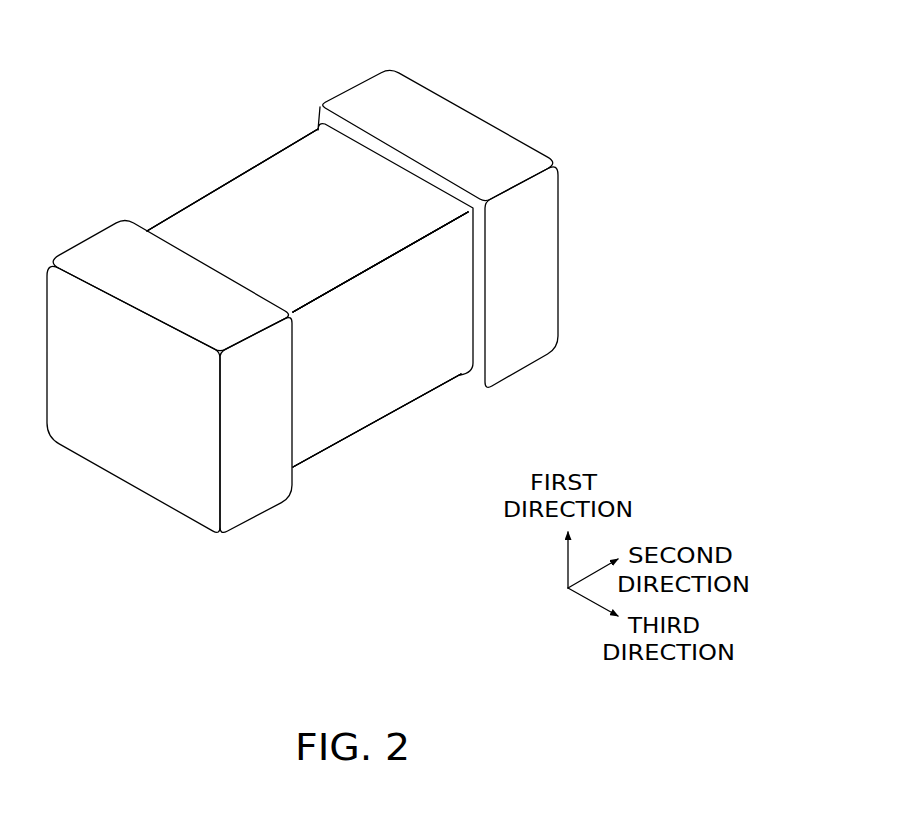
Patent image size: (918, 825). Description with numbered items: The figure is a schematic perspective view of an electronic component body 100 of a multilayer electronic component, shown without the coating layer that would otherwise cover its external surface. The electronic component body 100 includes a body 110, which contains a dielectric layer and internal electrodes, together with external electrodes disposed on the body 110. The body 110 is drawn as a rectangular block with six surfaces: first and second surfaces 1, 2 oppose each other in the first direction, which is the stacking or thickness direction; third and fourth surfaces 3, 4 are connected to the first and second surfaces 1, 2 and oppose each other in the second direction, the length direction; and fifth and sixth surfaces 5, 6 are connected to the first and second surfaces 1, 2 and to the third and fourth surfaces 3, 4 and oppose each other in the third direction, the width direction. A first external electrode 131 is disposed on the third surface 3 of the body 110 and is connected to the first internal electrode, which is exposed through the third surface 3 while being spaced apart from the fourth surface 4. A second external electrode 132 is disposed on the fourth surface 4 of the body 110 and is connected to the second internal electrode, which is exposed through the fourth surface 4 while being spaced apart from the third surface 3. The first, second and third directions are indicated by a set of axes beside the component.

The electronic component body 100 is at (90, 38).
The body 110 is at (180, 237).
The first external electrode 131 is at (103, 250).
The second external electrode 132 is at (360, 103).
The first surface 1 is at (345, 392).
The second surface 2 is at (318, 185).
The third surface 3 is at (139, 436).
The fourth surface 4 is at (512, 242).
The fifth surface 5 is at (263, 207).
The sixth surface 6 is at (400, 362).